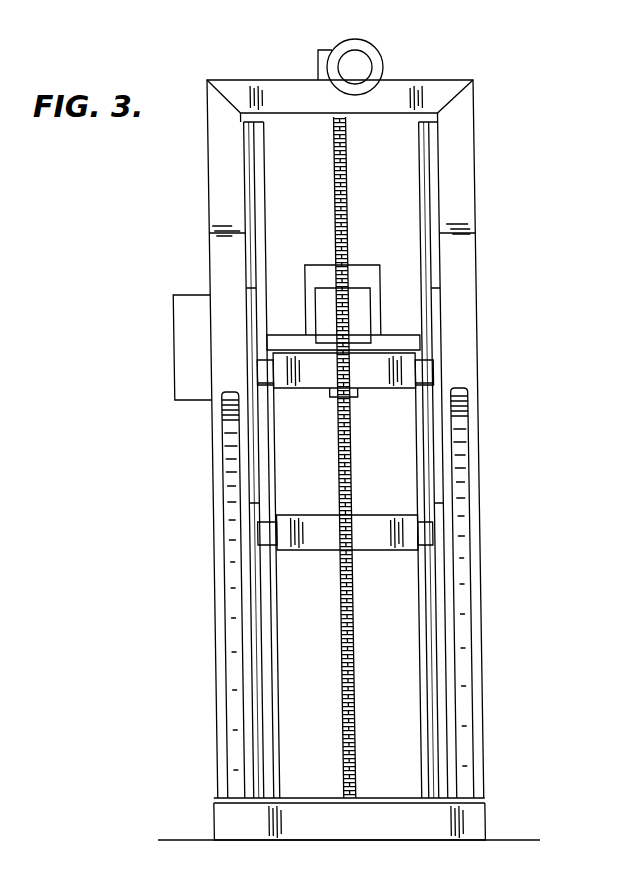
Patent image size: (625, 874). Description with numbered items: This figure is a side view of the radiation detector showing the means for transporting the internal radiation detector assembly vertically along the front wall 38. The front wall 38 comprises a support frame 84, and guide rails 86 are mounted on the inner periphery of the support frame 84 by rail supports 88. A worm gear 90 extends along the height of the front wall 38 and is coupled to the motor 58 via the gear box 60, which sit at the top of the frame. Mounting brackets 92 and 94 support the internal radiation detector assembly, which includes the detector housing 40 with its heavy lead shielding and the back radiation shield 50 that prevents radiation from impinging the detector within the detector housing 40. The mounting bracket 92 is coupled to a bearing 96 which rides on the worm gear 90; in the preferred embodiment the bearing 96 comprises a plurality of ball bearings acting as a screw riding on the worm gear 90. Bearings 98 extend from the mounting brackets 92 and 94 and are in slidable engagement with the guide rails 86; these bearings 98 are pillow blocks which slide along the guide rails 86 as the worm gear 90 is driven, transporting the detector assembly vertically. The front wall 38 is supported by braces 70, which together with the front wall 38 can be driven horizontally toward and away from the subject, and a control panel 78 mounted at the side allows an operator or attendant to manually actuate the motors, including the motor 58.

The front wall 38 is at (492, 200).
The detector housing 40 is at (365, 265).
The back radiation shield 50 is at (363, 307).
The motor 58 is at (371, 53).
The gear box 60 is at (327, 50).
The braces 70 is at (226, 490).
The control panel 78 is at (174, 330).
The support frame 84 is at (466, 118).
The guide rails 86 is at (264, 160).
The rail supports 88 is at (432, 167).
The worm gear 90 is at (333, 190).
The mounting bracket 92 is at (283, 392).
The mounting bracket 94 is at (365, 541).
The bearing 96 is at (356, 396).
The bearings 98 is at (434, 373).